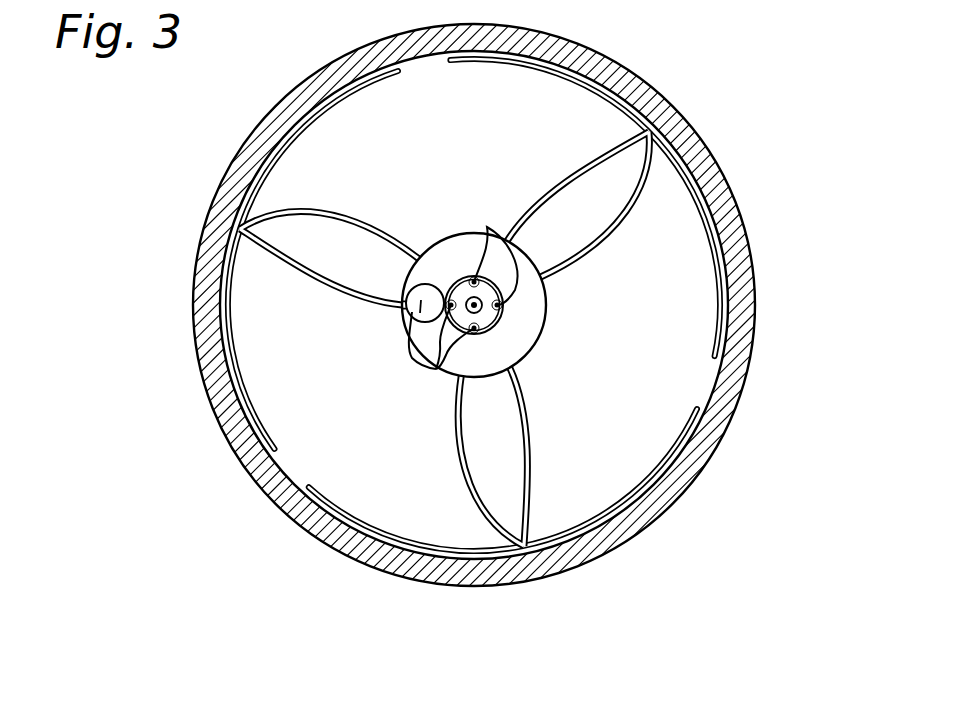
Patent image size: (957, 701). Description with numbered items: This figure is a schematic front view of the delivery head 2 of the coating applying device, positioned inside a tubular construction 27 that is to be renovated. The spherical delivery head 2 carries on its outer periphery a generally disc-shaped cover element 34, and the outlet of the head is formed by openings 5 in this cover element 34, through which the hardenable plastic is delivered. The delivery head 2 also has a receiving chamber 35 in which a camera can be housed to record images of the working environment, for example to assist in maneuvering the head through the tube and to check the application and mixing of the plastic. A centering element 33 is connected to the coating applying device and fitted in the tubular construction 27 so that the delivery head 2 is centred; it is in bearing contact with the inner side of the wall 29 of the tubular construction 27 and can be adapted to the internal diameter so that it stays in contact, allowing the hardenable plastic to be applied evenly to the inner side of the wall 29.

The delivery head 2 is at (478, 305).
The openings 5 is at (491, 226).
The tubular construction 27 is at (722, 128).
The wall 29 is at (208, 241).
The centering element 33 is at (322, 215).
The cover element 34 is at (477, 327).
The receiving chamber 35 is at (408, 352).